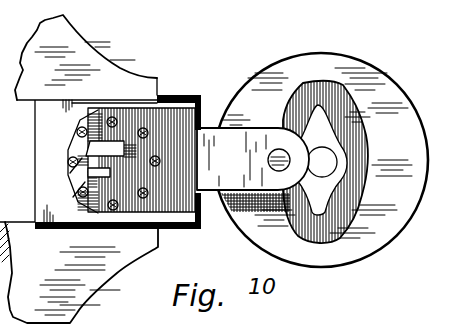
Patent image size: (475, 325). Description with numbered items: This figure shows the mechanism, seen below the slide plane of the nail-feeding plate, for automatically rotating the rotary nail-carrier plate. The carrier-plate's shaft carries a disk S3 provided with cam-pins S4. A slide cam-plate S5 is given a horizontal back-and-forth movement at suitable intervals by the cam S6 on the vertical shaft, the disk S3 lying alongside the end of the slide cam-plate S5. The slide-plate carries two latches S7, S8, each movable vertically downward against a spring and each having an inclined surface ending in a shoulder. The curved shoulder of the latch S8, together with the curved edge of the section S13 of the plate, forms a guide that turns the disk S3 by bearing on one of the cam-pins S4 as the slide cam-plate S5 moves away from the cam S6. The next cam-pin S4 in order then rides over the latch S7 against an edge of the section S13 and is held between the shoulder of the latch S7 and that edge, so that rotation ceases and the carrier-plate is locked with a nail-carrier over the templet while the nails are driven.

The disk S3 is at (319, 160).
The cam-pins S4 is at (113, 113).
The slide cam-plate S5 is at (253, 159).
The cam S6 is at (321, 160).
The latch S7 is at (71, 196).
The latch S8 is at (70, 173).
The section S13 is at (105, 159).